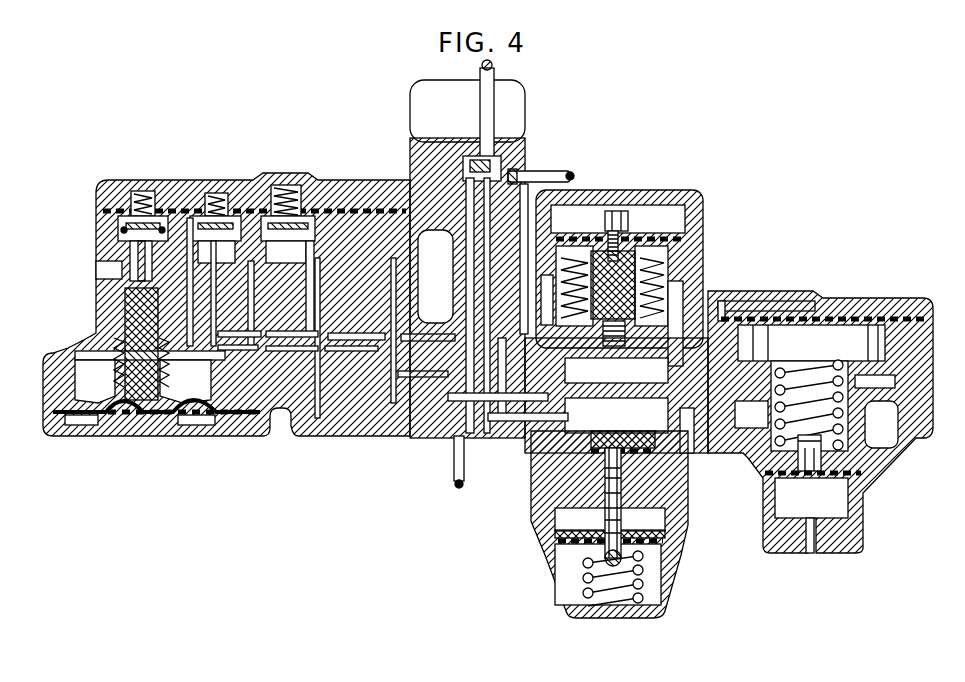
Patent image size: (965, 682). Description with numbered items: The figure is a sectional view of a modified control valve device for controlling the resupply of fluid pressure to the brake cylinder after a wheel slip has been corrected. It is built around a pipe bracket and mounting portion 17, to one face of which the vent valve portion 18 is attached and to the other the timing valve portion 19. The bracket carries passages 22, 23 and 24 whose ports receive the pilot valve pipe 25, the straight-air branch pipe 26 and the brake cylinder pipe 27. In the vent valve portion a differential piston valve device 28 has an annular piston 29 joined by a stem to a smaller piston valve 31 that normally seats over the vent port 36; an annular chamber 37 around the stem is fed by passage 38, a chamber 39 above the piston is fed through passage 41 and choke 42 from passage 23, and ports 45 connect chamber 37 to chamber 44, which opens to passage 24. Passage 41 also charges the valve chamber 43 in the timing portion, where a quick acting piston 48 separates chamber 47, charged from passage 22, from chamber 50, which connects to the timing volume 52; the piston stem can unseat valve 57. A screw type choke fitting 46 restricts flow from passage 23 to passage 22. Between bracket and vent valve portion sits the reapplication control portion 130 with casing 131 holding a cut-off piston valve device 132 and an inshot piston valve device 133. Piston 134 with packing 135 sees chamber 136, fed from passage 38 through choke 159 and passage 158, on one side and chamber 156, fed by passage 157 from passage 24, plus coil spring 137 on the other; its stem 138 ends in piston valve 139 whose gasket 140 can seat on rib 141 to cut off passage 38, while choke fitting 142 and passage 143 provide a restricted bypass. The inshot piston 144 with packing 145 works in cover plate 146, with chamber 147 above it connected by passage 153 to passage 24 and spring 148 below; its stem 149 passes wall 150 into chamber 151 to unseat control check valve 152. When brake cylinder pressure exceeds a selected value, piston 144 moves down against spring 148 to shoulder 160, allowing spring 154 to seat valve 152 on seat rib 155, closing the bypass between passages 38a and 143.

The pipe bracket and mounting portion 17 is at (516, 83).
The vent valve portion 18 is at (920, 375).
The timing valve portion 19 is at (107, 285).
The passage 22 is at (468, 162).
The passage 23 is at (477, 186).
The passage 24 is at (421, 392).
The pilot valve pipe 25 is at (481, 68).
The straight-air pipe branch pipe 26 is at (550, 169).
The brake cylinder pipe 27 is at (450, 445).
The differential piston valve device 28 is at (918, 361).
The annular piston 29 is at (920, 316).
The piston valve 31 is at (833, 467).
The vent port 36 is at (817, 506).
The annular chamber 37 is at (867, 413).
The passage 38 is at (458, 447).
The passage 38a is at (520, 464).
The chamber 39 is at (862, 322).
The passage 41 is at (350, 330).
The choke 42 is at (390, 395).
The valve chamber 43 is at (118, 198).
The annular chamber 44 is at (880, 410).
The spaced ports 45 is at (853, 432).
The screw type choke fitting 46 is at (515, 140).
The chamber 47 is at (67, 348).
The quick acting piston 48 is at (112, 426).
The chamber 50 is at (200, 410).
The timing volume 52 is at (434, 217).
The valve 57 is at (110, 221).
The reapplication control portion 130 is at (600, 193).
The casing 131 is at (547, 432).
The cut-off piston valve device 132 is at (650, 193).
The inshot piston valve device 133 is at (563, 574).
The piston 134 is at (678, 227).
The cup-shaped composition packing 135 is at (560, 226).
The chamber 136 is at (622, 210).
The coil spring 137 is at (653, 260).
The stem 138 is at (681, 240).
The piston valve 139 is at (670, 290).
The sealing gasket 140 is at (634, 344).
The valve seat rib 141 is at (616, 371).
The choke fitting 142 is at (507, 437).
The passage 143 is at (696, 463).
The piston 144 is at (568, 543).
The cup-shaped packing 145 is at (546, 541).
The cover plate 146 is at (627, 607).
The chamber 147 is at (556, 521).
The spring 148 is at (627, 560).
The stem 149 is at (665, 526).
The wall 150 is at (628, 512).
The chamber 151 is at (630, 497).
The control check valve 152 is at (640, 490).
The passage 153 is at (640, 475).
The spring 154 is at (550, 492).
The seat rib 155 is at (548, 513).
The chamber 156 is at (633, 257).
The passage 157 is at (517, 432).
The passage 158 is at (648, 226).
The choke 159 is at (643, 317).
The shoulder 160 is at (565, 546).